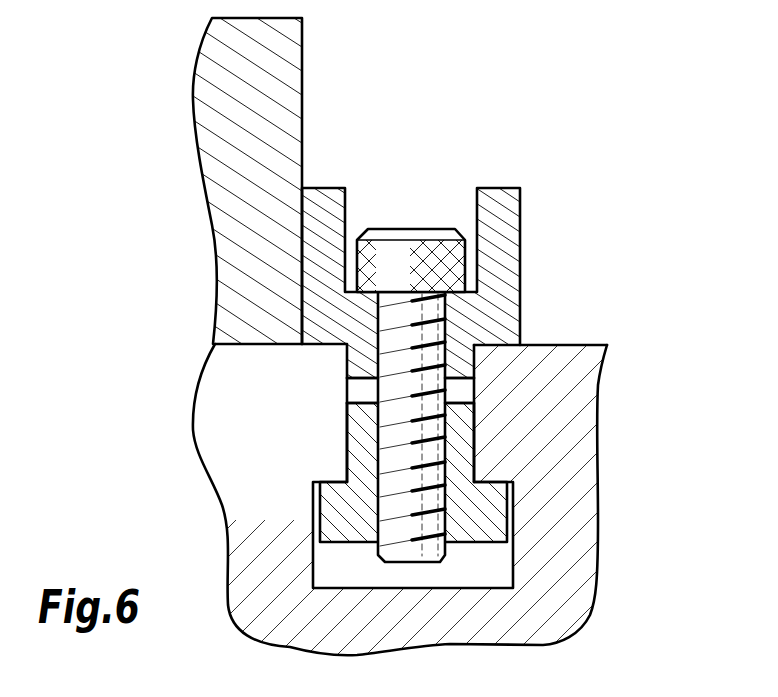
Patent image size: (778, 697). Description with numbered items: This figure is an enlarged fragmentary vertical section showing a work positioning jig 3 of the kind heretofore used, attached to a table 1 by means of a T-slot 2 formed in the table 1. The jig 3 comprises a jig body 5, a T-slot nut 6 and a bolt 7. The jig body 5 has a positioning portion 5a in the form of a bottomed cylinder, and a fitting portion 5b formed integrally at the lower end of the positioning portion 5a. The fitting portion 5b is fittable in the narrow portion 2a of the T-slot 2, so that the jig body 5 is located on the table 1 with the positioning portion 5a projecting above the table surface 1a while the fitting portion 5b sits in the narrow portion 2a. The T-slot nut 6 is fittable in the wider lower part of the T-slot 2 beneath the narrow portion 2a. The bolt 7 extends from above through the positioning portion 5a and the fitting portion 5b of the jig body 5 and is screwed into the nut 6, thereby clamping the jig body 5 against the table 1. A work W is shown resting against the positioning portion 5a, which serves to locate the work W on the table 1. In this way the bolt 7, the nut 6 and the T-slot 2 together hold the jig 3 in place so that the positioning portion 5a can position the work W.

The workpiece W is at (220, 42).
The table 1 is at (461, 457).
The top surface of base 1a is at (579, 345).
The T-slot 2 is at (490, 504).
The narrow portion of the T-slot 2a is at (484, 476).
The work positioning jig 3 is at (548, 188).
The jig body 5 is at (481, 265).
The positioning portion 5a is at (488, 195).
The fitting portion 5b is at (467, 367).
The T-slot nut 6 is at (495, 517).
The bolt 7 is at (393, 247).